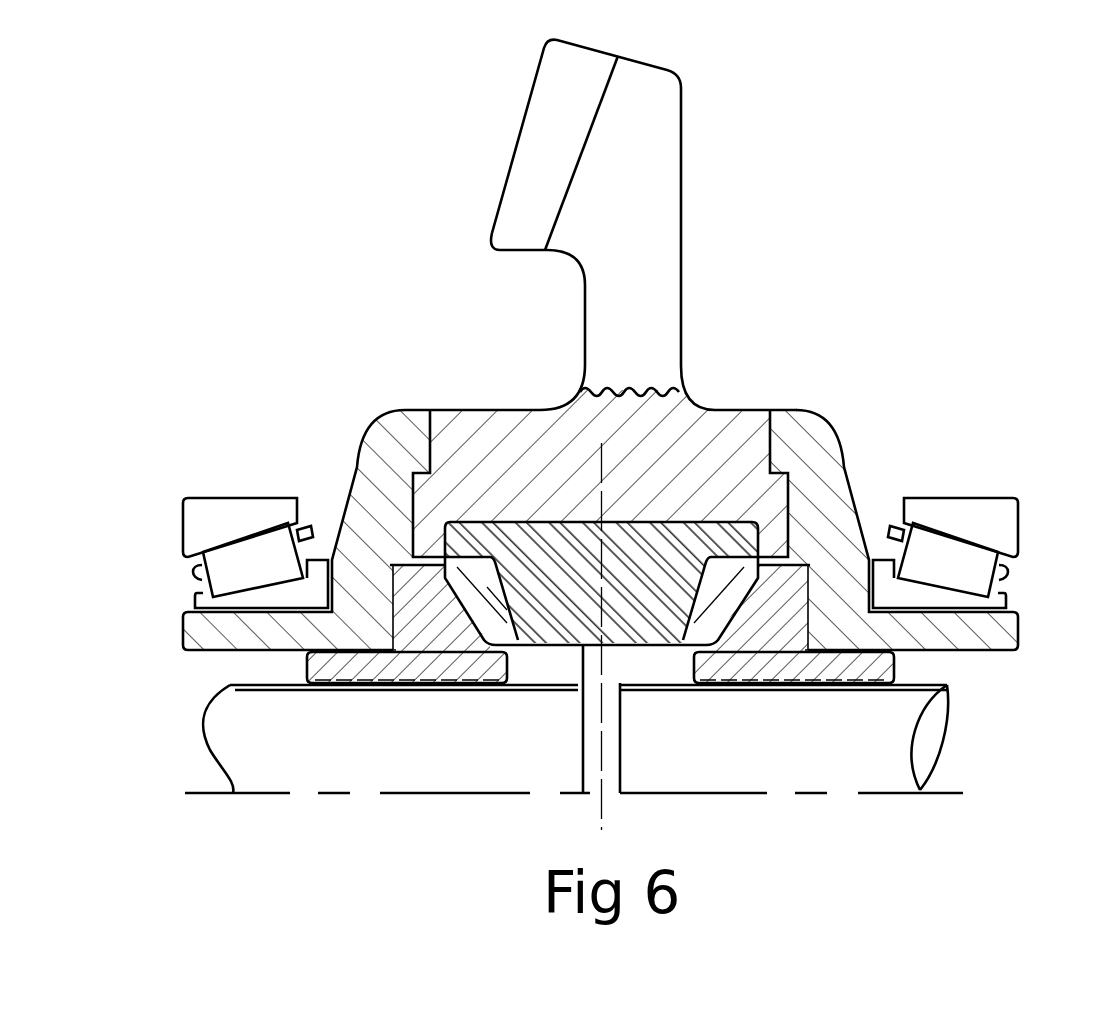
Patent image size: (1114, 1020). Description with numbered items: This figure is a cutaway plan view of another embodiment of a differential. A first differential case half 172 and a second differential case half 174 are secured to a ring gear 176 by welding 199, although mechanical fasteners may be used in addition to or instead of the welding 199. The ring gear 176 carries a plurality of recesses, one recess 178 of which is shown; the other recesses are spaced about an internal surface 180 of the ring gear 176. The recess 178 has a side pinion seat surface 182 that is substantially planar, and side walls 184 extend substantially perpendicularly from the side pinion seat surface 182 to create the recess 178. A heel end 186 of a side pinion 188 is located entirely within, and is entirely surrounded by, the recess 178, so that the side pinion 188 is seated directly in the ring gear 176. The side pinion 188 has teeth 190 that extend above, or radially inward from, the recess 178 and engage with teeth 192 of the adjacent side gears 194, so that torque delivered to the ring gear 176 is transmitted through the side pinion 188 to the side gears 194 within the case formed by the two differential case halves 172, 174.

The first differential case half 172 is at (240, 640).
The second differential case half 174 is at (973, 640).
The ring gear 176 is at (680, 187).
The recess 178 is at (585, 518).
The internal surface 180 is at (690, 505).
The side pinion seat surface 182 is at (505, 522).
The side walls 184 is at (737, 522).
The heel end 186 is at (757, 545).
The side pinion 188 is at (535, 637).
The teeth 190 is at (688, 645).
The teeth 192 is at (515, 650).
The side gears 194 is at (422, 667).
The welding 199 is at (430, 410).